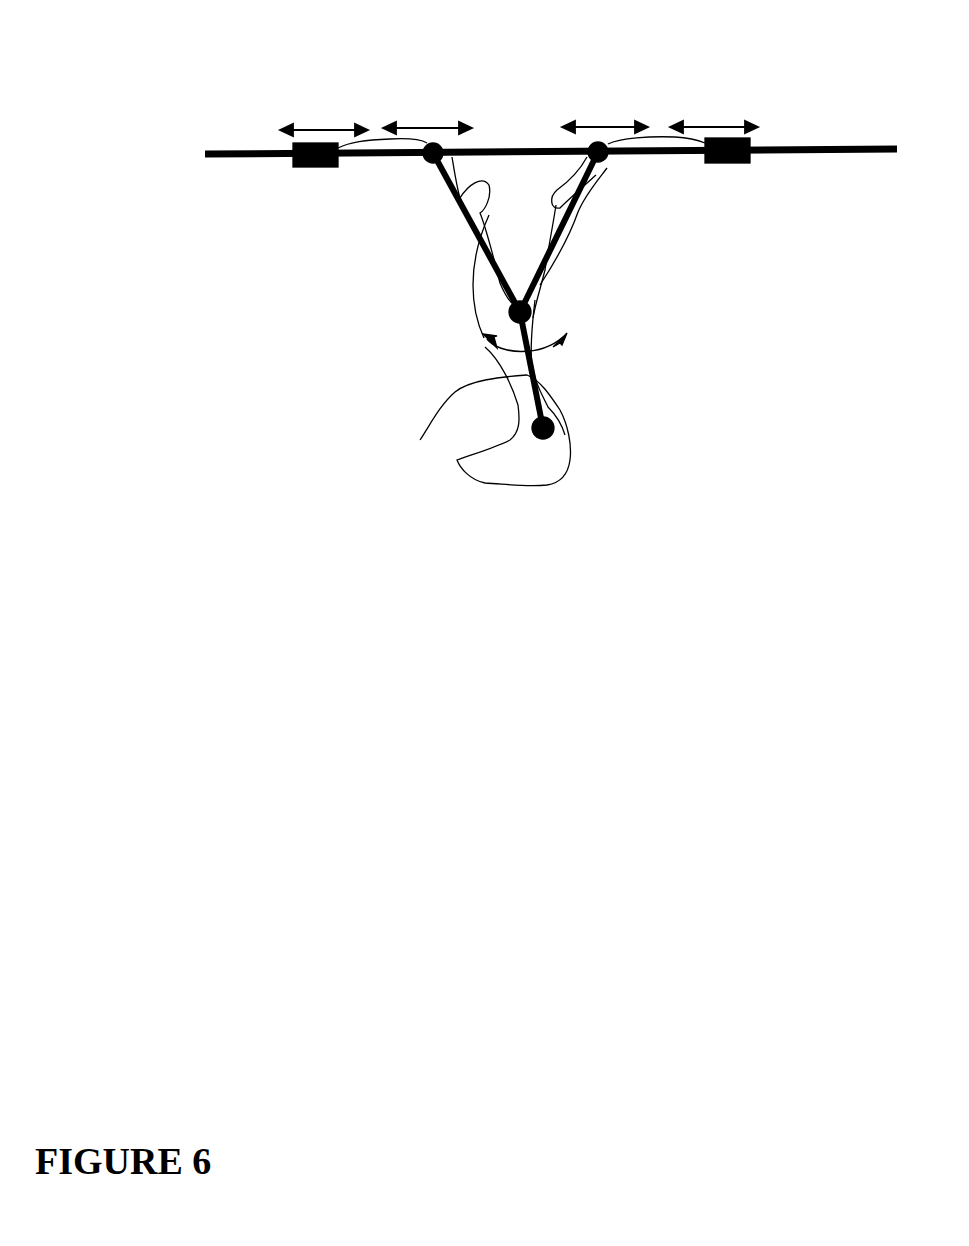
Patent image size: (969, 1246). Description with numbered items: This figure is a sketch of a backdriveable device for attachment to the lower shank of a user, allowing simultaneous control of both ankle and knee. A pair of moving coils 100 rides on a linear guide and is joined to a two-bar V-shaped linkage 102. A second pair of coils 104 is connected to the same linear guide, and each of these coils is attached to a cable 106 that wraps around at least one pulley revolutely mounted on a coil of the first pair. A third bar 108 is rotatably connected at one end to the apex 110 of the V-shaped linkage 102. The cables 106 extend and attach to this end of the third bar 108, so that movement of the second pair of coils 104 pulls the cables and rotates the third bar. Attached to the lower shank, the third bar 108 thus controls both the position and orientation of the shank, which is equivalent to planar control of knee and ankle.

The moving coils 100 is at (432, 143).
The two-bar V-shaped linkage 102 is at (437, 190).
The second pair of coils 104 is at (313, 142).
The cable 106 is at (517, 175).
The third bar 108 is at (447, 407).
The apex 110 is at (533, 313).